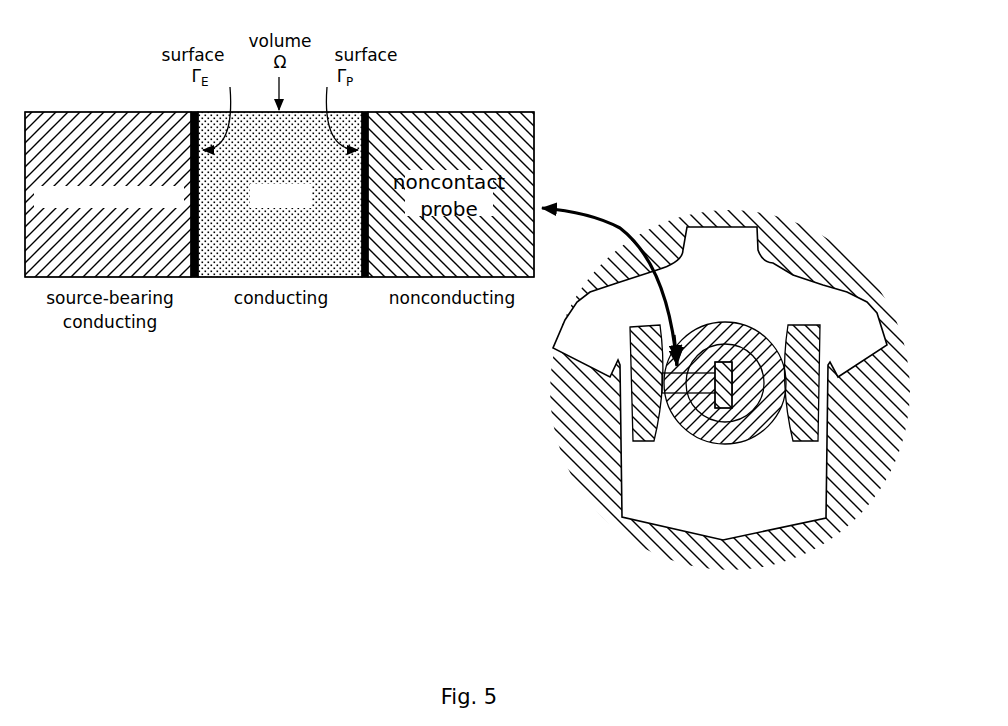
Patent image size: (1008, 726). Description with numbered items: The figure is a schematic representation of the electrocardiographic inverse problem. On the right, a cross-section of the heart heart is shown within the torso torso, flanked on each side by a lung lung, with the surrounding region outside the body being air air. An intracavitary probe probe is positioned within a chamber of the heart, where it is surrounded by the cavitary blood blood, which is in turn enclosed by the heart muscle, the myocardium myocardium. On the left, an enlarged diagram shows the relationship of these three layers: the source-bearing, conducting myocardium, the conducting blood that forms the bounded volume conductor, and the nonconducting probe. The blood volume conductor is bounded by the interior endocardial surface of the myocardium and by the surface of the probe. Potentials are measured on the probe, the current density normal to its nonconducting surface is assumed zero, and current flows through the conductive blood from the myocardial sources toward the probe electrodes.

The element heart is at (763, 323).
The element lung is at (628, 437).
The intracavitary probe is at (710, 408).
The cavitary blood is at (728, 418).
The element myocardium is at (732, 440).
The element torso is at (632, 523).
The element air is at (632, 547).